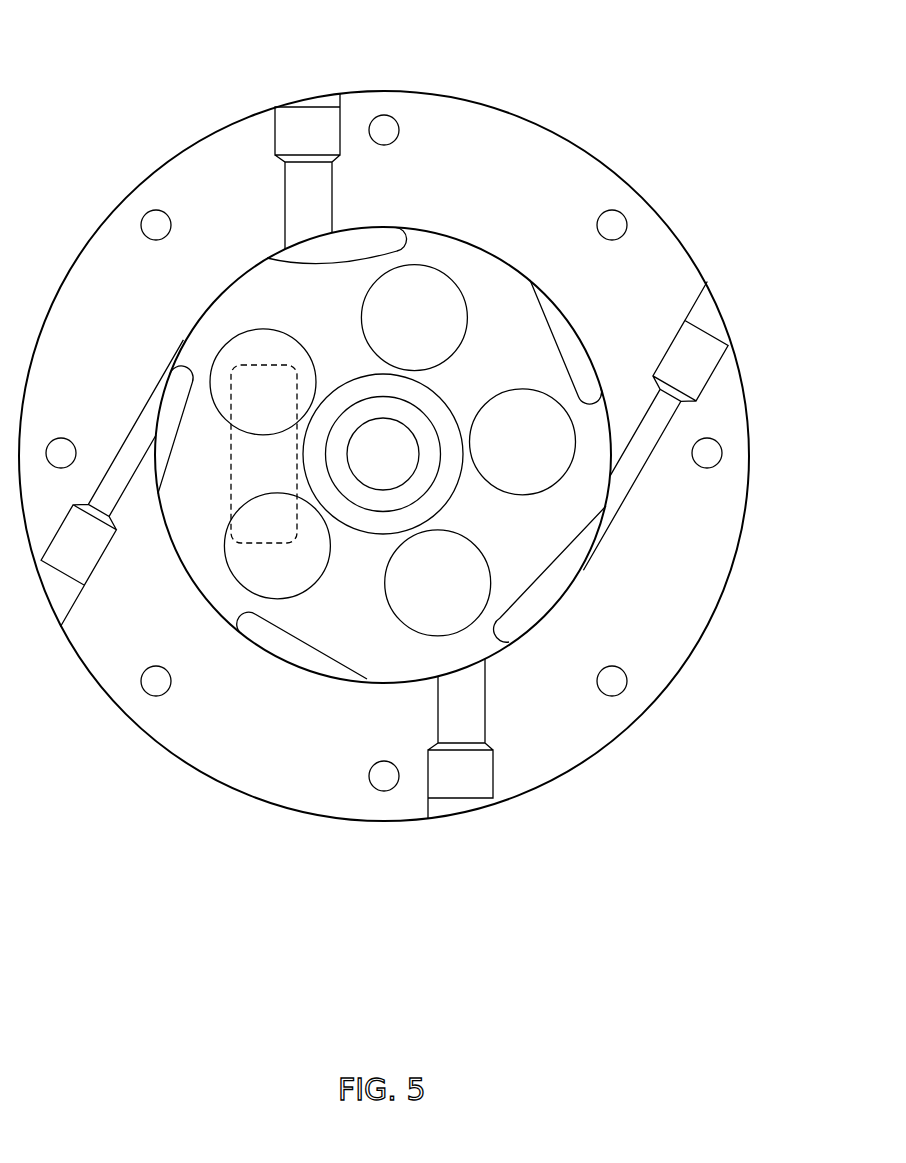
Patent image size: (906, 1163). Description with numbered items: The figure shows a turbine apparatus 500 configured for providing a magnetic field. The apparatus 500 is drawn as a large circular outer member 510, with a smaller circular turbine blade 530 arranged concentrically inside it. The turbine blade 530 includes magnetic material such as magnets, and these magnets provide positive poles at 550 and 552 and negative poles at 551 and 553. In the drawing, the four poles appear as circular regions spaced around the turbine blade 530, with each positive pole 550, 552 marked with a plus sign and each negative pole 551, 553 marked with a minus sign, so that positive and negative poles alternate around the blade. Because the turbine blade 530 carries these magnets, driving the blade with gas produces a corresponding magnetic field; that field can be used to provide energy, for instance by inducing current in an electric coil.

The turbine apparatus 500 is at (413, 420).
The flange 510 is at (502, 108).
The turbine blade 530 is at (383, 351).
The positive pole 550 is at (505, 332).
The negative pole 551 is at (540, 551).
The positive pole 552 is at (201, 560).
The negative pole 553 is at (258, 303).